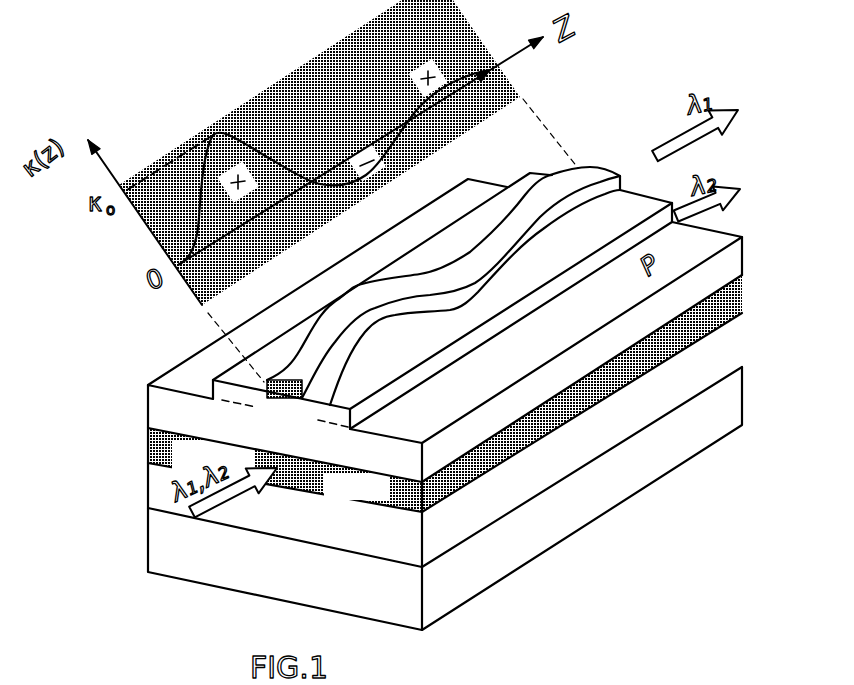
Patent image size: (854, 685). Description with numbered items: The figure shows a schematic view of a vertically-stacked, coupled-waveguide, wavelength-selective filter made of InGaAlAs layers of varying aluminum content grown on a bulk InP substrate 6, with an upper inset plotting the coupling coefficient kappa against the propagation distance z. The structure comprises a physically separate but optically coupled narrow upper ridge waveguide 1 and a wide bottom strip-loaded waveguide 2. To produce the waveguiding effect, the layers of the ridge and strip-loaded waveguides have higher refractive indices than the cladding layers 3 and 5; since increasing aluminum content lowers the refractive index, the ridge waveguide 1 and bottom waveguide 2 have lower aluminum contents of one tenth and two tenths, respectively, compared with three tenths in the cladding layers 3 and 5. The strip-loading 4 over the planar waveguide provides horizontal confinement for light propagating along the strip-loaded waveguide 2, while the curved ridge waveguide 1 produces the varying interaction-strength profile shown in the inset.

The upper (ridge) waveguide 1 is at (600, 173).
The bottom (strip-loaded) waveguide 2 is at (723, 308).
The cladding layer 3 is at (165, 405).
The strip-loading 4 is at (343, 390).
The cladding layer 5 is at (727, 359).
The InP substrate 6 is at (727, 410).